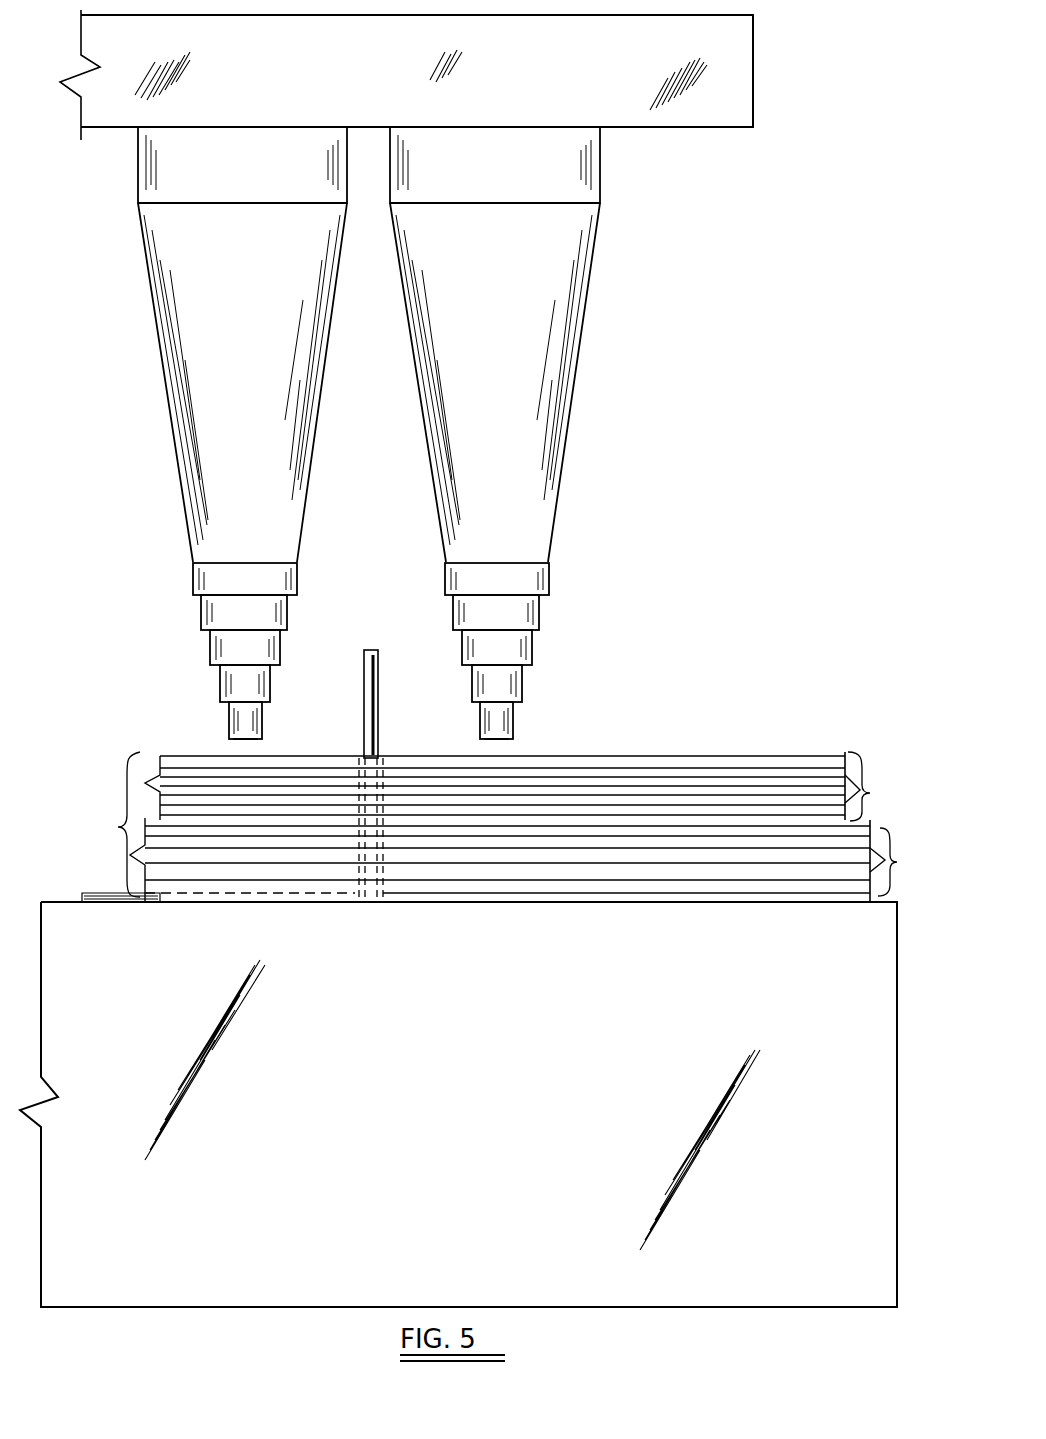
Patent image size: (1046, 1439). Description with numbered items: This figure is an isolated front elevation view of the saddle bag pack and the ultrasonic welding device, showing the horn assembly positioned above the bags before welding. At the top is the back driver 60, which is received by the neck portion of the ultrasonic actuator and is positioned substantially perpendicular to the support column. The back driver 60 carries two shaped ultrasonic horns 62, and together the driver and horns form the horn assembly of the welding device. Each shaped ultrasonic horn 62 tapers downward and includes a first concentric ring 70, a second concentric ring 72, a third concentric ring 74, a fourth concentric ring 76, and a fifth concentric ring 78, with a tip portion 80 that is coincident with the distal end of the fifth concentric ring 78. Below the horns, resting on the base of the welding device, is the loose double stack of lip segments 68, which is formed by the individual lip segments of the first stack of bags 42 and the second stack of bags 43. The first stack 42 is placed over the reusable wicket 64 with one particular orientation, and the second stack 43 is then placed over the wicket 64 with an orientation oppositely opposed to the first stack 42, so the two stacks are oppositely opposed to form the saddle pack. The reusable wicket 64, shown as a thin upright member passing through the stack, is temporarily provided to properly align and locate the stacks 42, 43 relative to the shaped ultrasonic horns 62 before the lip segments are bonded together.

The first stack of thermoplastic bags 42 is at (897, 862).
The second stack of thermoplastic bags 43 is at (877, 767).
The back driver 60 is at (755, 55).
The shaped ultrasonic horn 62 is at (150, 270).
The reusable wicket 64 is at (371, 731).
The loose double stack of lip segments 68 is at (120, 827).
The first concentric ring 70 is at (299, 572).
The second concentric ring 72 is at (200, 612).
The third concentric ring 74 is at (282, 650).
The fourth concentric ring 76 is at (220, 688).
The fifth concentric ring 78 is at (263, 723).
The tip portion 80 is at (238, 742).